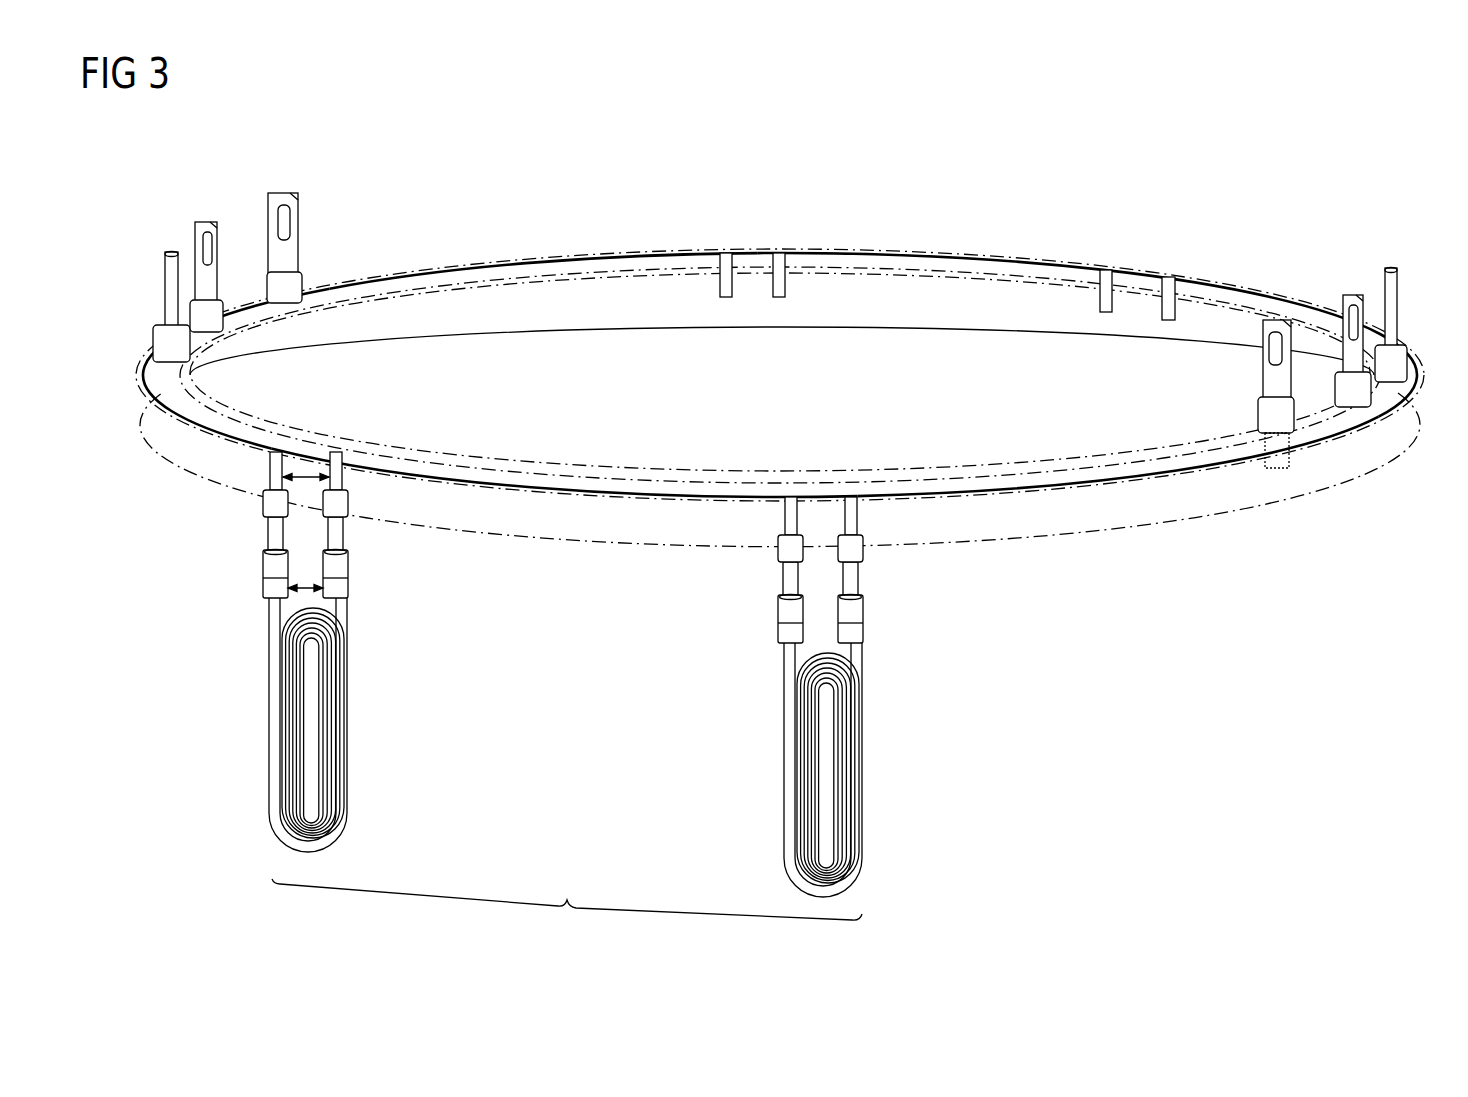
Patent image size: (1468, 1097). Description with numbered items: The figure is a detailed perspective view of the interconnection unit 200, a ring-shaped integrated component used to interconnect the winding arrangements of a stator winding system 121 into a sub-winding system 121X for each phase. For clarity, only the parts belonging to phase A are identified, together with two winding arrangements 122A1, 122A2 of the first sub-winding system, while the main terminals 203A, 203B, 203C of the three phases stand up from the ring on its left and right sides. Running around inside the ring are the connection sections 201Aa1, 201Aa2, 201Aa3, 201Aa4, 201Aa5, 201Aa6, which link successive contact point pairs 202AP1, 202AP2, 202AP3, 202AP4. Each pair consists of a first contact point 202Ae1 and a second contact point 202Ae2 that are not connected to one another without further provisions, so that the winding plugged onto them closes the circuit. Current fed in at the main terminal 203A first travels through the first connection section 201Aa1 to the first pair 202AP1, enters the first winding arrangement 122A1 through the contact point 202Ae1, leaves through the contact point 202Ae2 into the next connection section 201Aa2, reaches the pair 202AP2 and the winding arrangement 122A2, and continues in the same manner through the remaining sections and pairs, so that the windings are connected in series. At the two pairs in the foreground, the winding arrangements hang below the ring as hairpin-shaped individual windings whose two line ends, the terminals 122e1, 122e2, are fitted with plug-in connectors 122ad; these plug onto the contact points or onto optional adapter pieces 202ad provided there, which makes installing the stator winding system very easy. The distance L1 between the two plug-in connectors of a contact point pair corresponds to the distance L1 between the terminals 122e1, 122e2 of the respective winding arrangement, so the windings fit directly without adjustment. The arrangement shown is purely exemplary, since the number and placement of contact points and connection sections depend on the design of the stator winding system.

The interconnection unit 200 is at (1277, 138).
The first connection section 201Aa1 is at (252, 300).
The connection section 201Aa2 is at (597, 500).
The connection section 201Aa3 is at (1105, 490).
The connection section 201Aa4 is at (1200, 270).
The connection section 201Aa5 is at (960, 250).
The connection section 201Aa6 is at (610, 250).
The first contact point pair 202AP1 is at (325, 438).
The contact point pair 202AP2 is at (828, 487).
The contact point pair 202AP3 is at (1140, 270).
The contact point pair 202AP4 is at (757, 247).
The first contact point 202Ae1 is at (782, 292).
The second contact point 202Ae2 is at (726, 292).
The adapter piece 202ad is at (266, 510).
The main terminal 203A is at (287, 193).
The main terminal 203B is at (201, 222).
The main terminal 203C is at (168, 252).
The stator winding system 121 is at (248, 742).
The sub-winding system 121X is at (567, 915).
The first winding arrangement 122A1 is at (325, 826).
The winding arrangement 122A2 is at (840, 864).
The plug-in connector 122ad is at (265, 588).
The terminal 122e1 is at (270, 627).
The terminal 122e2 is at (347, 628).
The distance L1 is at (305, 483).